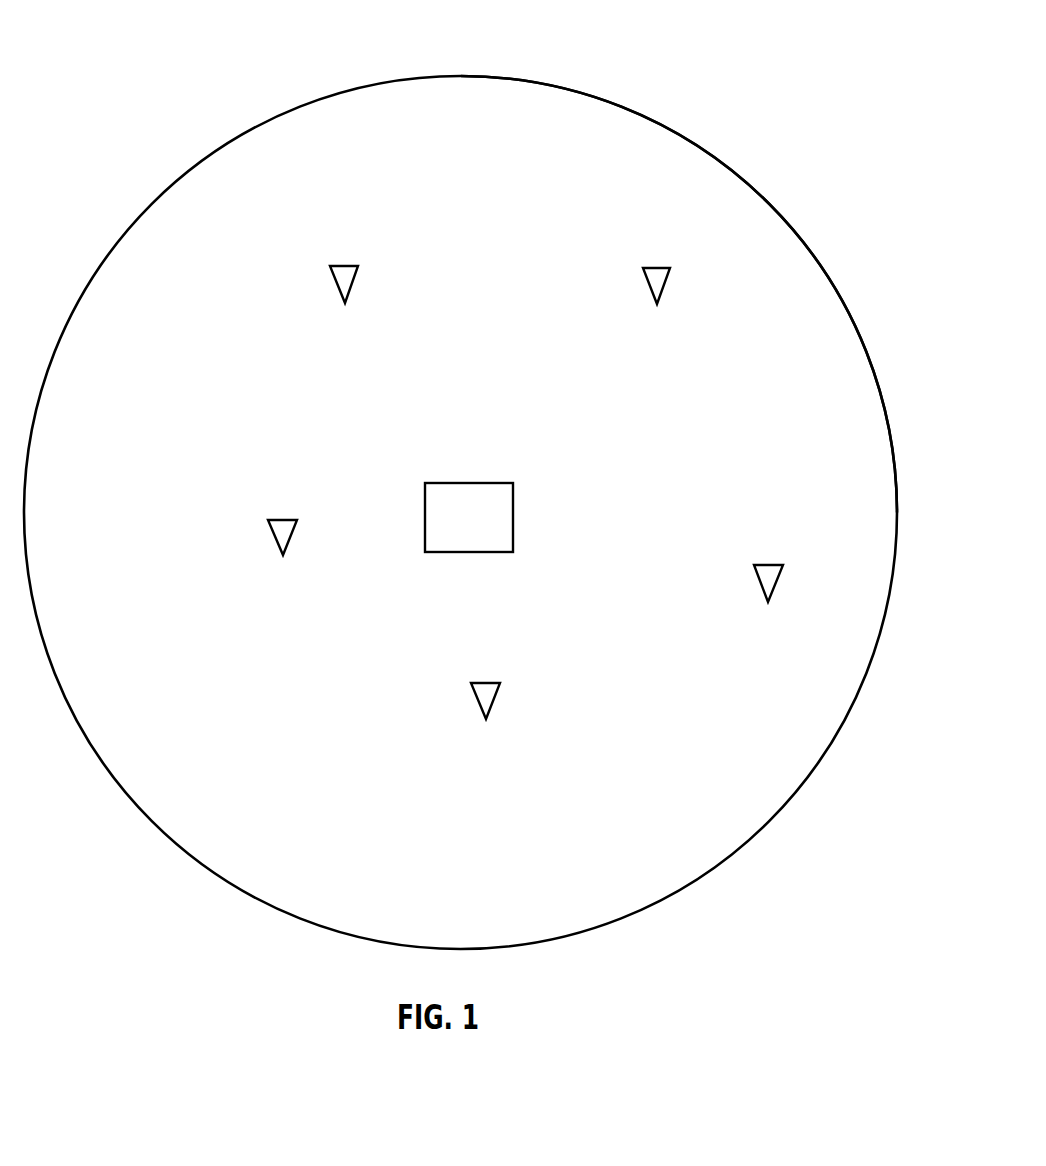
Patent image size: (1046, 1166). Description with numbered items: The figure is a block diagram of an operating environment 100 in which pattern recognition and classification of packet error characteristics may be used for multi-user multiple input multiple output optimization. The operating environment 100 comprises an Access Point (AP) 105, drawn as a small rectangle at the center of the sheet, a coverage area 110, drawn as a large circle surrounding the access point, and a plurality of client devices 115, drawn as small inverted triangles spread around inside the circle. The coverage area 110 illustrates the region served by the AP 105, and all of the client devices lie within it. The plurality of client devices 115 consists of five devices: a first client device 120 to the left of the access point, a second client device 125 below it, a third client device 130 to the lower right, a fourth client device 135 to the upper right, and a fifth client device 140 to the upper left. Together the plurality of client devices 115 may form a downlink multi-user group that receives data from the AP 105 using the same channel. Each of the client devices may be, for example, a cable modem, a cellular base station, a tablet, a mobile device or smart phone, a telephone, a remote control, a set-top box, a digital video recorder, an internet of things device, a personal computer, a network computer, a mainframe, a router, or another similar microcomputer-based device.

The operating environment 100 is at (742, 48).
The Access Point (AP) 105 is at (482, 483).
The coverage area 110 is at (745, 177).
The plurality of client devices 115 is at (444, 206).
The first client device 120 is at (283, 533).
The second client device 125 is at (486, 697).
The third client device 130 is at (768, 578).
The fourth client device 135 is at (657, 282).
The fifth client device 140 is at (344, 284).